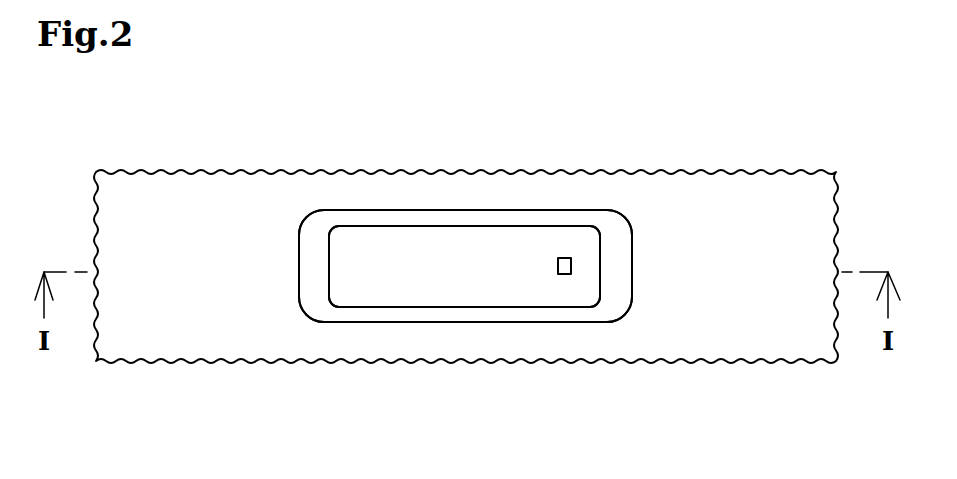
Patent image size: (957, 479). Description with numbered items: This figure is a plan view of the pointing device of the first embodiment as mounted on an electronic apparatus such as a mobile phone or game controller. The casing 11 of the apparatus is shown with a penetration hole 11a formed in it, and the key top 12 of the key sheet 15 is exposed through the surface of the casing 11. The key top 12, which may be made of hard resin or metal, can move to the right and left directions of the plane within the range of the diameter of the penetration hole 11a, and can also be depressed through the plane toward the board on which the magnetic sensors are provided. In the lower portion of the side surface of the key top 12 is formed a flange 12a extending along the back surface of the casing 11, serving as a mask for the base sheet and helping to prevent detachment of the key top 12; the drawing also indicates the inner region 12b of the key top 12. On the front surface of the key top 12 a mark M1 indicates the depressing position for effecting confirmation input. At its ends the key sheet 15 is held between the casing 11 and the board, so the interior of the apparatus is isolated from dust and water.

The casing 11 is at (742, 171).
The penetration hole 11a is at (299, 282).
The key top 12 is at (465, 273).
The key sheet 15 is at (463, 307).
The flange 12a is at (613, 267).
The inner portion of tag 12b is at (408, 253).
The mark M1 is at (560, 257).